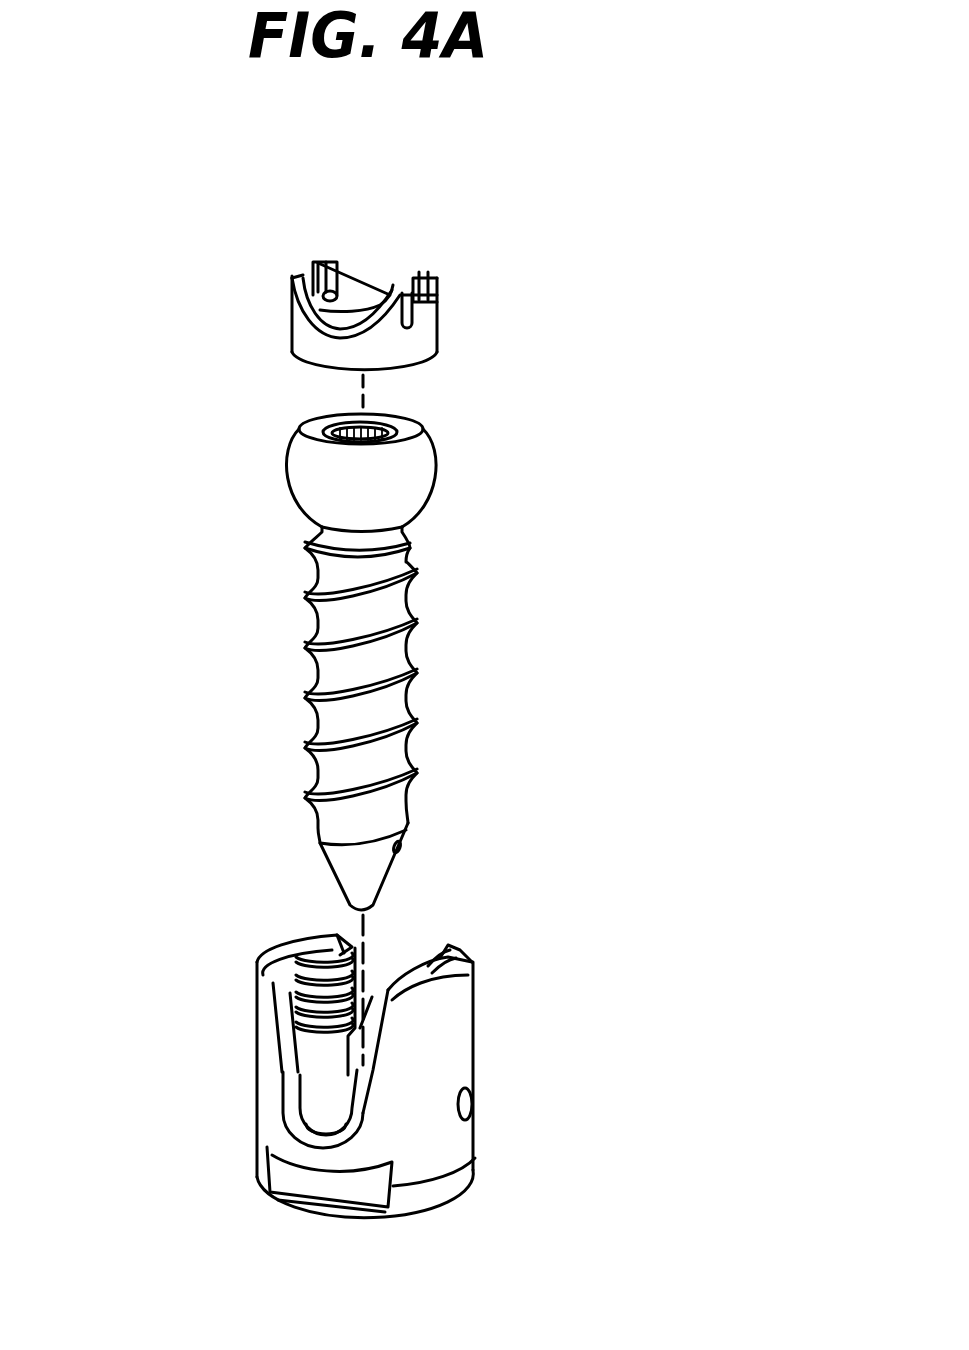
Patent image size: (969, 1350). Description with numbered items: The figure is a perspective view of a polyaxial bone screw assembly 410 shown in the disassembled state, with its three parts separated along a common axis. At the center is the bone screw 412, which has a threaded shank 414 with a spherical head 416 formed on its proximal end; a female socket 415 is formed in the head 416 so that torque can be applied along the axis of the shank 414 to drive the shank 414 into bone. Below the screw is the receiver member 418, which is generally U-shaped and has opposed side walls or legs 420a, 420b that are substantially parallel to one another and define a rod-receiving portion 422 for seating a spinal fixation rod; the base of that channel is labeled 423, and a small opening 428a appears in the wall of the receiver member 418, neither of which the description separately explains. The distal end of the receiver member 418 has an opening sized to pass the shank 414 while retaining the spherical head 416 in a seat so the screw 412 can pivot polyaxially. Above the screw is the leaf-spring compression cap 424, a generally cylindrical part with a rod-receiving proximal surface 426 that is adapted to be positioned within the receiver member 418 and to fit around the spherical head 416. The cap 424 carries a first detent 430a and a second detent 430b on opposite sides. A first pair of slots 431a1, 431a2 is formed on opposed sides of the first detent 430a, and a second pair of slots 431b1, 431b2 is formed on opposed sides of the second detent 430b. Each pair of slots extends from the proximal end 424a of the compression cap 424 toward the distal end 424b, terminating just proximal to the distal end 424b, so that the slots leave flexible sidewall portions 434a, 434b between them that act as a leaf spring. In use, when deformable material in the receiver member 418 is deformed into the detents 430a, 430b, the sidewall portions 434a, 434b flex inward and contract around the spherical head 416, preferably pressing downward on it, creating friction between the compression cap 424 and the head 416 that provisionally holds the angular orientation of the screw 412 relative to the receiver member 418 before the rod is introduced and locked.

The polyaxial bone screw assembly 410 is at (160, 163).
The bone screw 412 is at (199, 415).
The threaded shank 414 is at (293, 520).
The female socket 415 is at (377, 424).
The spherical head 416 is at (394, 502).
The receiver member 418 is at (540, 1025).
The side wall or leg 420a is at (470, 1078).
The side wall or leg 420b is at (257, 1042).
The rod-receiving portion 422 is at (405, 940).
The channel seat 423 is at (298, 1124).
The leaf-spring compression cap 424 is at (684, 298).
The proximal end of the compression cap 424a is at (440, 272).
The distal end of the compression cap 424b is at (447, 350).
The rod-receiving proximal surface 426 is at (322, 316).
The aperture in receiver 428a is at (473, 1104).
The first detent 430a is at (437, 298).
The second detent 430b is at (297, 267).
The slot of first pair of slots 431a1 is at (395, 300).
The slot of first pair of slots 431a2 is at (412, 288).
The slot of second pair of slots 431b1 is at (292, 278).
The slot of second pair of slots 431b2 is at (333, 264).
The sidewall portion 434a is at (437, 312).
The sidewall portion 434b is at (345, 272).